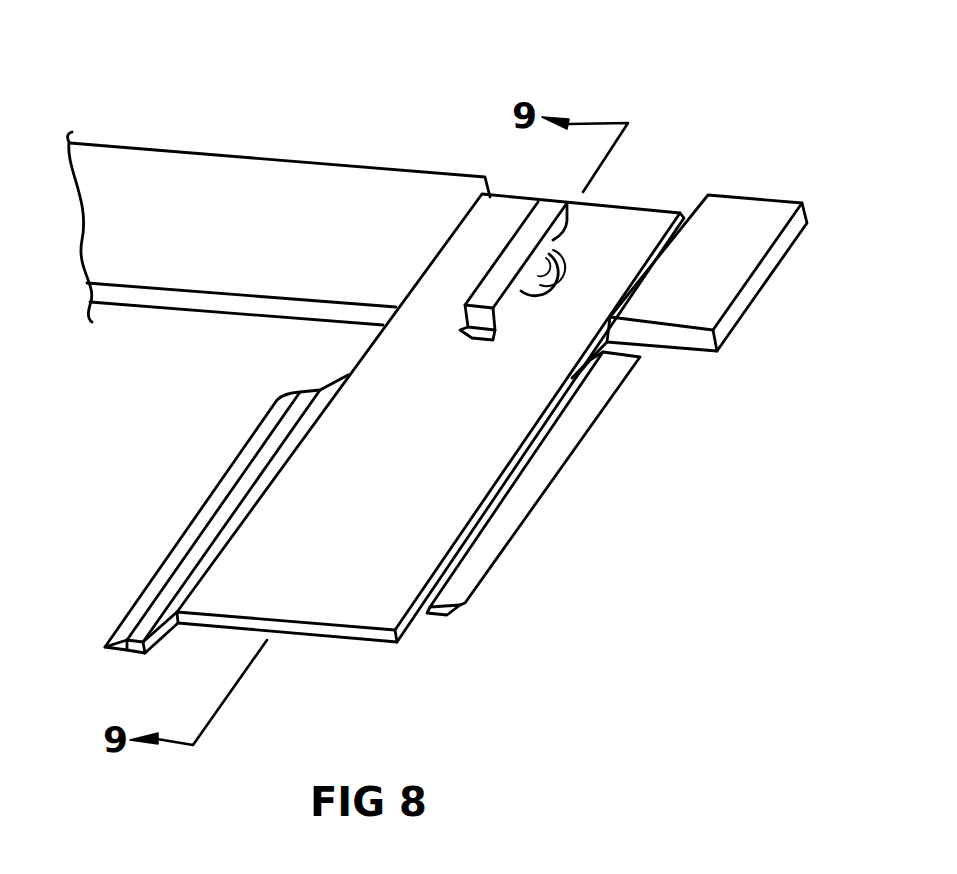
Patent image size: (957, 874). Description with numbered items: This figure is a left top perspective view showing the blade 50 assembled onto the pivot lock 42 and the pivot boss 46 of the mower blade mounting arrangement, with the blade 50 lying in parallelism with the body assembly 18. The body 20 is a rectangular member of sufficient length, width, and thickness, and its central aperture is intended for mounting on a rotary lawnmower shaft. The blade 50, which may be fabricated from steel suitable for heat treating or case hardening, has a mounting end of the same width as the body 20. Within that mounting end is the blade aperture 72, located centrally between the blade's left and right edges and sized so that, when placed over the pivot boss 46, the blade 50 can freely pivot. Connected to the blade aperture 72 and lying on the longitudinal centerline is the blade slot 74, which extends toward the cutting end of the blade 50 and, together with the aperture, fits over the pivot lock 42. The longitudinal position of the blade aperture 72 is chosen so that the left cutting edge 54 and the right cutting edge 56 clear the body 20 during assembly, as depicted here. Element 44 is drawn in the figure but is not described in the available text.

The body assembly 18 is at (329, 154).
The body 20 is at (195, 185).
The pivot lock 42 is at (583, 203).
The contact 44 is at (530, 262).
The pivot boss 46 is at (543, 277).
The blade 50 is at (308, 625).
The left cutting edge 54 is at (168, 555).
The right cutting edge 56 is at (497, 568).
The blade aperture 72 is at (548, 278).
The blade slot 74 is at (478, 338).